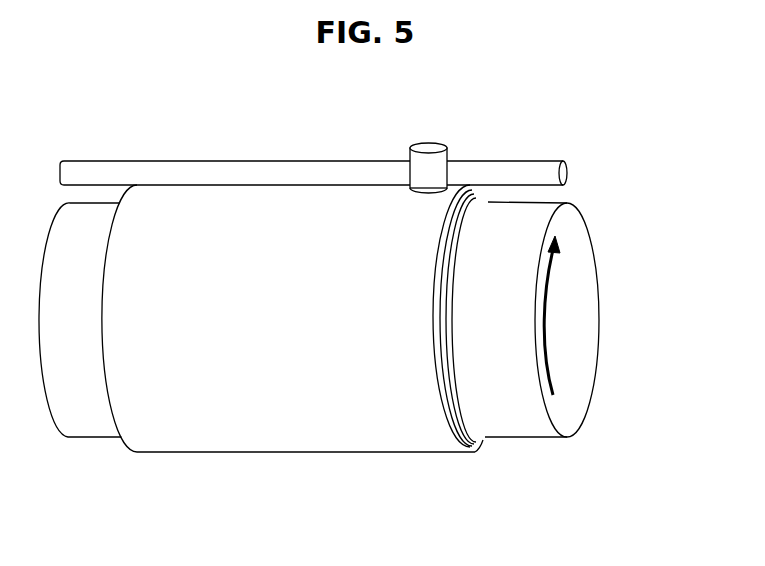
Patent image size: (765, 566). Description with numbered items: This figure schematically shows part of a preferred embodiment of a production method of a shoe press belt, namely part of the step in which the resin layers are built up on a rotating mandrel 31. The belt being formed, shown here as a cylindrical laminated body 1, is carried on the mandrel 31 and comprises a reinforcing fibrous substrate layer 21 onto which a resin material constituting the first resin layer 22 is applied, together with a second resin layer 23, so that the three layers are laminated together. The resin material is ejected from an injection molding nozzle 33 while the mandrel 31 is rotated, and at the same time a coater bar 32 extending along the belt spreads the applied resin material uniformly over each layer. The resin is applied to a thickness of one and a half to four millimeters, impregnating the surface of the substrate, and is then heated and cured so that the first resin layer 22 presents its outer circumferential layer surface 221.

The roller device 1 is at (370, 288).
The reinforcing fibrous substrate layer 21 is at (457, 390).
The first resin layer 22 is at (442, 333).
The second resin layer 23 is at (472, 430).
The outer circumferential layer surface 221 is at (298, 452).
The mandrel 31 is at (568, 305).
The coater bar 32 is at (568, 172).
The injection molding nozzle 33 is at (440, 138).